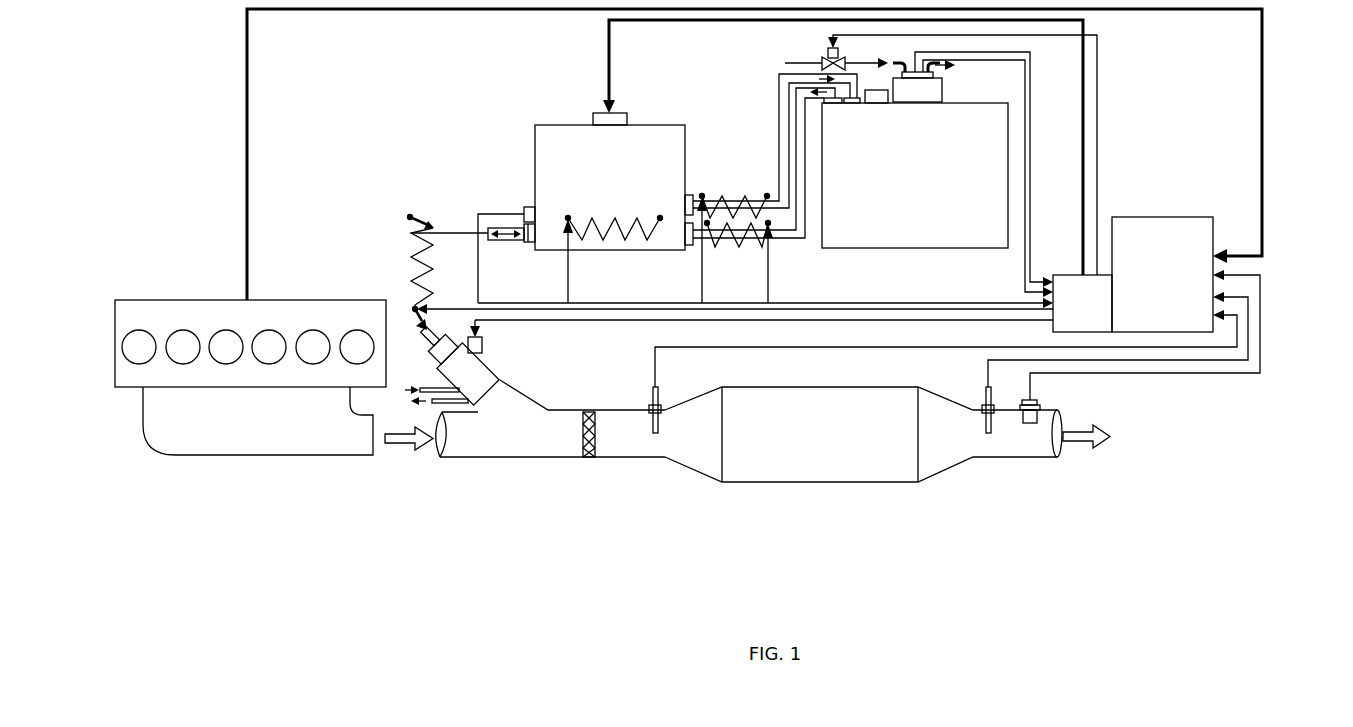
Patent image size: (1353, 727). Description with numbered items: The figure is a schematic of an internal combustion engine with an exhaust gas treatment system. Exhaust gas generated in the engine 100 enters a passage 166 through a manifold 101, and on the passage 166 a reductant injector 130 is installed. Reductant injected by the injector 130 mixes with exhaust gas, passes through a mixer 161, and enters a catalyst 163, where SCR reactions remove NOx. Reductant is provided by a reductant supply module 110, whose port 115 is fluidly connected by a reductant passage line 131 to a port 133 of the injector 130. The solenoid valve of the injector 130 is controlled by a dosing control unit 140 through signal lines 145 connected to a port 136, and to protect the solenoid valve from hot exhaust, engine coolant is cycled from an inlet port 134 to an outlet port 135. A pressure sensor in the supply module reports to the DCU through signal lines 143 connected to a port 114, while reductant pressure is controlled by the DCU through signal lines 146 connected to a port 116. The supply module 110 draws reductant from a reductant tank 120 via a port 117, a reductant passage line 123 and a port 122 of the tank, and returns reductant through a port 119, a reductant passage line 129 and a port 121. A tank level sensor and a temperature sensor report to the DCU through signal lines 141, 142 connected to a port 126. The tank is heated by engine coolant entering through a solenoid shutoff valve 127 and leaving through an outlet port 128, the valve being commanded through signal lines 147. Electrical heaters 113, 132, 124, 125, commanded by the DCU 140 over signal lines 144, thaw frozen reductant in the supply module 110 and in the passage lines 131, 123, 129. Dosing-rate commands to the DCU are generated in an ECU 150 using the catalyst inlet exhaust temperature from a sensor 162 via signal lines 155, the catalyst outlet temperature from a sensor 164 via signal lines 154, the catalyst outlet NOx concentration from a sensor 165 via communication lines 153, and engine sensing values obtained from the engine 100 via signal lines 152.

The engine 100 is at (204, 292).
The manifold 101 is at (258, 456).
The reductant supply module 110 is at (556, 115).
The electrical heater 113 is at (655, 214).
The port 114 is at (522, 208).
The port 115 is at (520, 244).
The port 116 is at (630, 113).
The port 117 is at (688, 246).
The port 119 is at (690, 196).
The reductant tank 120 is at (916, 260).
The port 121 is at (851, 105).
The port 122 is at (832, 105).
The reductant passage line 123 is at (780, 240).
The electrical heater 124 is at (715, 232).
The electrical heater 125 is at (725, 200).
The port 126 is at (943, 88).
The solenoid shutoff valve 127 is at (897, 61).
The outlet port 128 is at (938, 68).
The reductant passage line 129 is at (706, 199).
The reductant injector 130 is at (496, 366).
The reductant passage line 131 is at (438, 222).
The electrical heater 132 is at (407, 217).
The port 133 is at (430, 350).
The inlet port 134 is at (431, 388).
The outlet port 135 is at (435, 404).
The port 136 is at (486, 340).
The dosing control unit 140 is at (1070, 338).
The signal lines 141 is at (1033, 272).
The signal lines 142 is at (1024, 288).
The signal lines 143 is at (996, 302).
The signal lines 144 is at (998, 311).
The signal lines 145 is at (1021, 322).
The signal lines 146 is at (1081, 172).
The signal lines 147 is at (1098, 143).
The ECU 150 is at (1170, 205).
The signal lines 152 is at (1264, 142).
The communication lines 153 is at (1262, 282).
The signal lines 154 is at (1250, 320).
The signal lines 155 is at (1240, 350).
The mixer 161 is at (597, 454).
The sensor 162 is at (650, 399).
The catalyst 163 is at (812, 386).
The sensor 164 is at (983, 396).
The sensor 165 is at (1041, 401).
The passage 166 is at (490, 460).